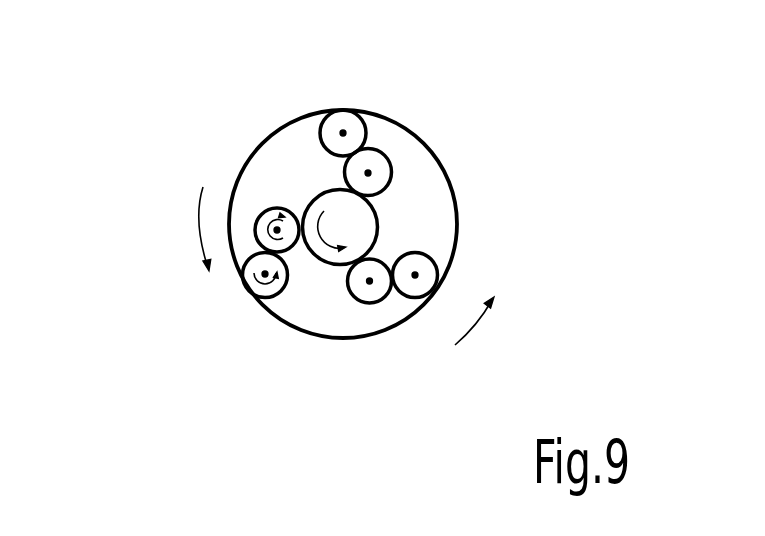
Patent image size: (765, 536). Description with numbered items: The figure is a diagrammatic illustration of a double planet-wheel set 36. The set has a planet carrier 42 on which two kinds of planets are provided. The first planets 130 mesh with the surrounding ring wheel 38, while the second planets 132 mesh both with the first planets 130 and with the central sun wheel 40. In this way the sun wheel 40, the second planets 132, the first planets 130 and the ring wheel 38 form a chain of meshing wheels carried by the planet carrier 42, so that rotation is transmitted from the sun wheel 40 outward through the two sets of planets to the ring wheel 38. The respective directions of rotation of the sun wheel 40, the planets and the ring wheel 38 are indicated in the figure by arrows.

The double planet-wheel set 36 is at (521, 149).
The ring wheel 38 is at (455, 217).
The sun wheel 40 is at (315, 195).
The planet carrier 42 is at (344, 131).
The first planets 130 is at (322, 123).
The second planets 132 is at (373, 305).